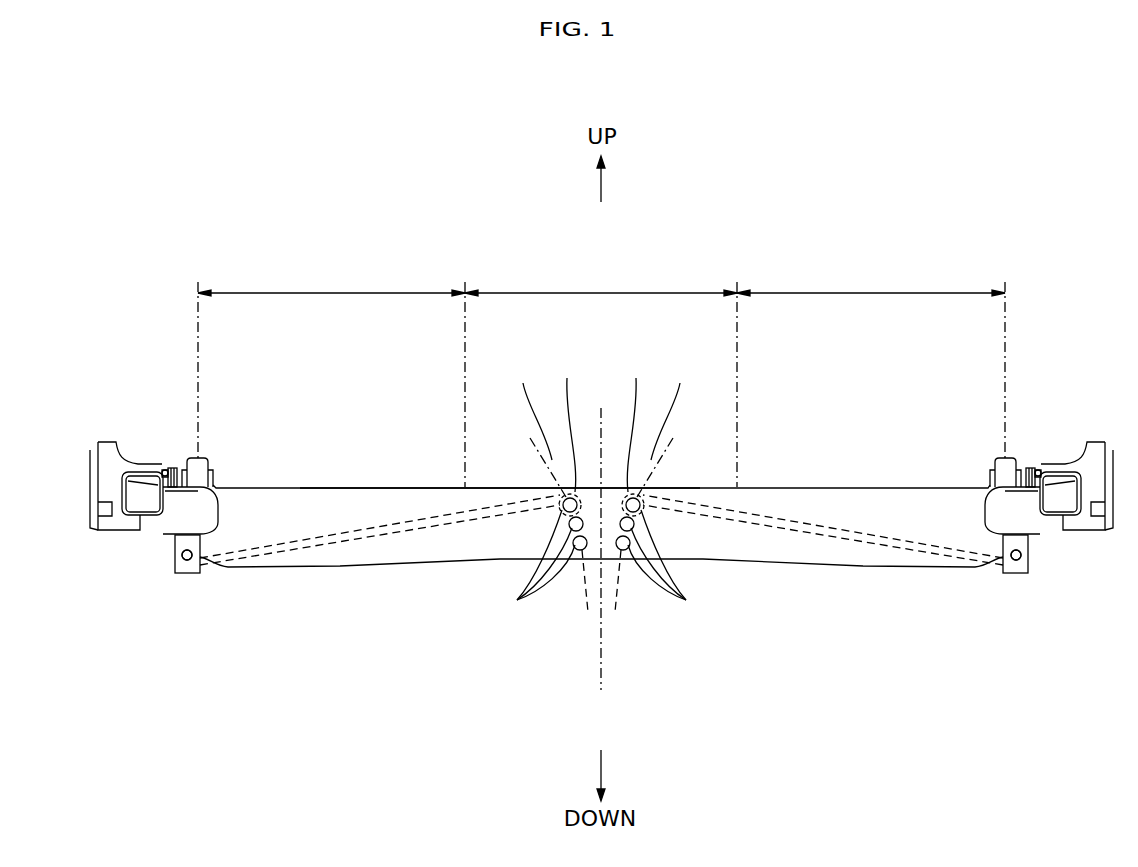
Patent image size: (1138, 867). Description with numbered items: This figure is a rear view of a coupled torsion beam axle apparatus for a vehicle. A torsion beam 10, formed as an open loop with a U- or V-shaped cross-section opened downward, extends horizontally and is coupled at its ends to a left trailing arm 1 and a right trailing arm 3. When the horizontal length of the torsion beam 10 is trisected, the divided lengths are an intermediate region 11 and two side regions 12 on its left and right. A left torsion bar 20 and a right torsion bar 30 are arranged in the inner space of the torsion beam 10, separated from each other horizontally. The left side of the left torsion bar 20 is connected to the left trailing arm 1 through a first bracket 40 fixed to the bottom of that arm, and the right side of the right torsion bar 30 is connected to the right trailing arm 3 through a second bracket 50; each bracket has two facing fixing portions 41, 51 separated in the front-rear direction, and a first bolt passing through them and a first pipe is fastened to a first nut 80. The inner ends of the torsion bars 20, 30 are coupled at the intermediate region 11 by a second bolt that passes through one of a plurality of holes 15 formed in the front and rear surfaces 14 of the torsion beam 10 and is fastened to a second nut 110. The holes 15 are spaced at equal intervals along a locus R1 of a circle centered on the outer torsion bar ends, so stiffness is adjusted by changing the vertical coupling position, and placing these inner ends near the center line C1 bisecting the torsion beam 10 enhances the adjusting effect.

The left trailing arm 1 is at (177, 500).
The right trailing arm 3 is at (1023, 500).
The torsion beam 10 is at (772, 570).
The intermediate region 11 is at (601, 374).
The side region 12 is at (601, 359).
The rear surface 14 is at (301, 497).
The hole 15 is at (598, 568).
The left torsion bar 20 is at (336, 548).
The right torsion bar 30 is at (862, 547).
The first bracket 40 is at (171, 602).
The fixing portion 41 is at (172, 575).
The second bracket 50 is at (1039, 602).
The fixing portion 51 is at (1032, 575).
The first nut 80 is at (182, 556).
The second nut 110 is at (601, 480).
The locus of a circle R1 is at (601, 426).
The center line C1 is at (599, 555).